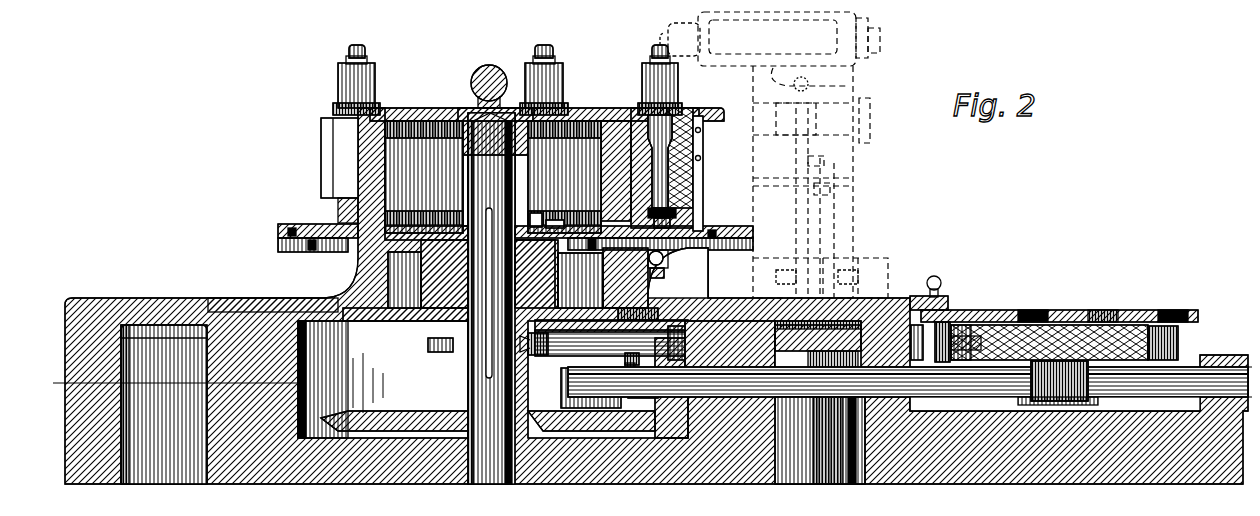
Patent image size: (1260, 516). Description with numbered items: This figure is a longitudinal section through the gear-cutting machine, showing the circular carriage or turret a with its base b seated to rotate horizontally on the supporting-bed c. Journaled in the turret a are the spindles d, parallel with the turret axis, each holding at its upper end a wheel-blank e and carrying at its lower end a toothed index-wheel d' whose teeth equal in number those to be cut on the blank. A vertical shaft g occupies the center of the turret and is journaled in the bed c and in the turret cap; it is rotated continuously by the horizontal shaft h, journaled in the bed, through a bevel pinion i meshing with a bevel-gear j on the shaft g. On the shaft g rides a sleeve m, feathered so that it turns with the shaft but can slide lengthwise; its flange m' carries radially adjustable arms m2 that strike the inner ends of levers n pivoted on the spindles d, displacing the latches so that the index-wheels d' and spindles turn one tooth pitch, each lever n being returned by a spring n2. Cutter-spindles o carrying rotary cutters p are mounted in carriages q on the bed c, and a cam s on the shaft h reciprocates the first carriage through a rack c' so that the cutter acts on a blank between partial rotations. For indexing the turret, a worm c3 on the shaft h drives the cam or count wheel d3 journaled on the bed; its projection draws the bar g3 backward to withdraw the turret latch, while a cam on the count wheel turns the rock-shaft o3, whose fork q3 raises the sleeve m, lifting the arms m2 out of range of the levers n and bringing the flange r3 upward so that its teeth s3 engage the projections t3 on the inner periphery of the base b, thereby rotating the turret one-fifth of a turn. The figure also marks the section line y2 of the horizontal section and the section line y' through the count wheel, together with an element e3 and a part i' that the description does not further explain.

The circular carriage or turret a is at (352, 152).
The base b is at (282, 290).
The supporting-bed c is at (656, 309).
The spindle d is at (516, 142).
The wheel-blank e is at (358, 41).
The vertical shaft g is at (495, 274).
The horizontal shaft h is at (908, 382).
The bevel pinion i is at (639, 381).
The bevel-gear j is at (608, 388).
The sleeve m is at (494, 214).
The lever n is at (515, 237).
The cutter-spindle o is at (684, 39).
The rotary cutter p is at (650, 27).
The carriage q is at (793, 155).
The cam s is at (795, 405).
The radial arm m2 is at (527, 206).
The flange m' is at (579, 245).
The spring n2 is at (688, 175).
The toothed index-wheel d' is at (680, 265).
The projection t3 is at (640, 305).
The bar g3 is at (930, 298).
The cam or count wheel d3 is at (955, 313).
The worm c3 is at (1056, 396).
The phantom part e3 is at (847, 275).
The rack c' is at (786, 274).
The fork q3 is at (425, 333).
The flange r3 is at (535, 348).
The rock-shaft o3 is at (580, 330).
The teeth s3 is at (620, 340).
The shaft i' is at (615, 363).
The section line y2 is at (252, 382).
The section line y' is at (1250, 382).